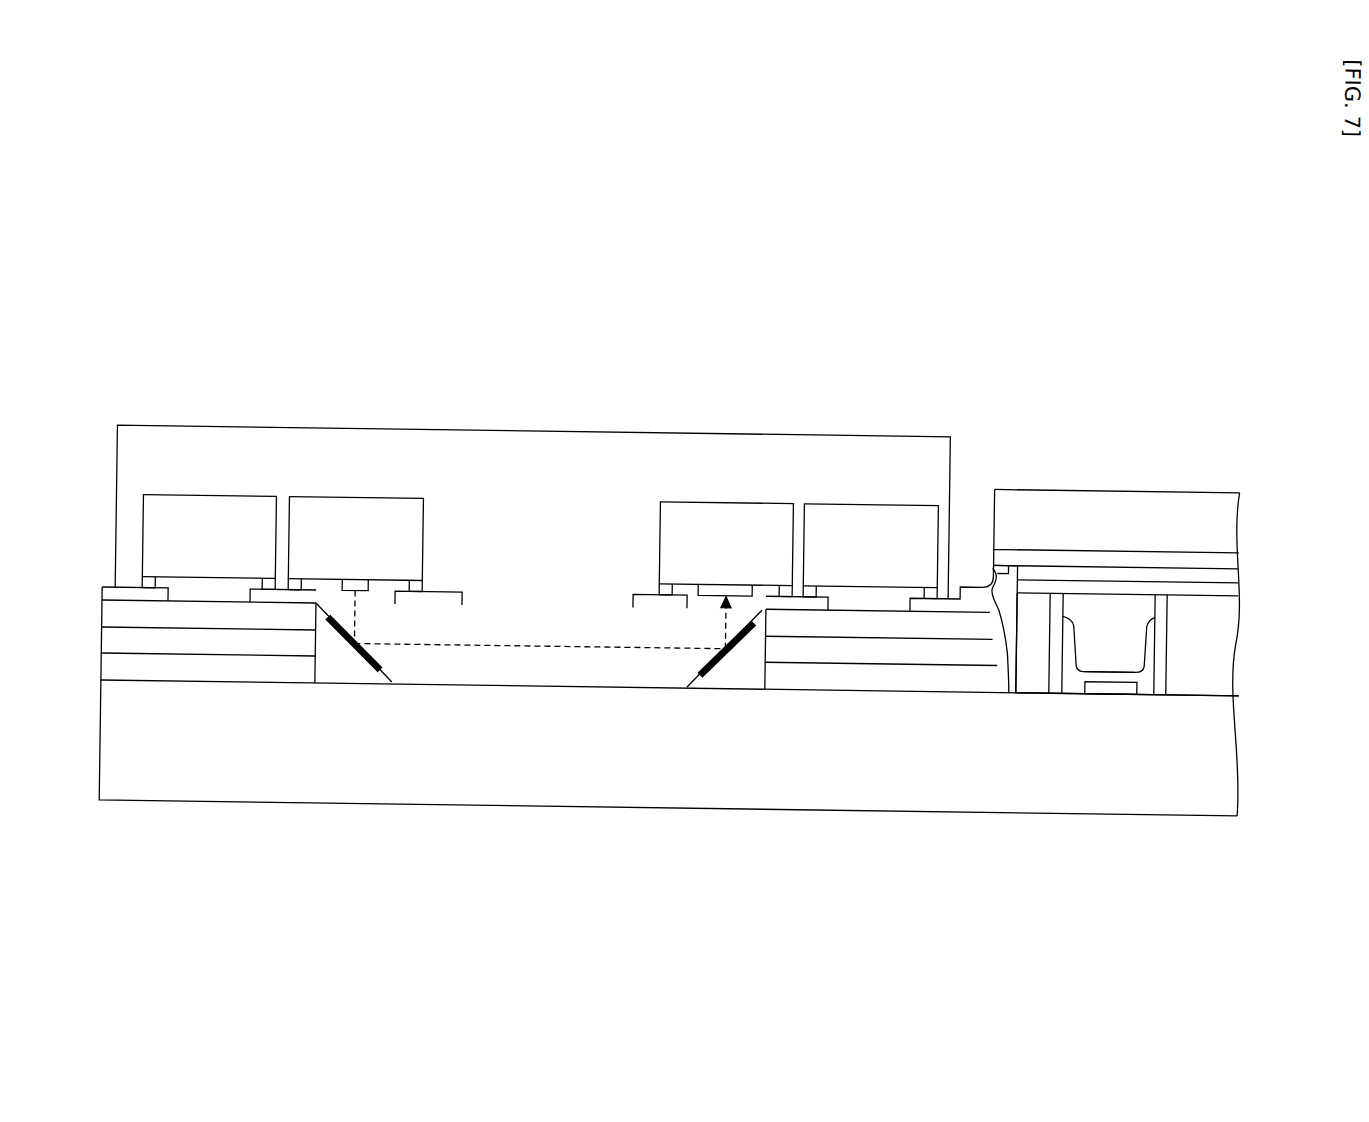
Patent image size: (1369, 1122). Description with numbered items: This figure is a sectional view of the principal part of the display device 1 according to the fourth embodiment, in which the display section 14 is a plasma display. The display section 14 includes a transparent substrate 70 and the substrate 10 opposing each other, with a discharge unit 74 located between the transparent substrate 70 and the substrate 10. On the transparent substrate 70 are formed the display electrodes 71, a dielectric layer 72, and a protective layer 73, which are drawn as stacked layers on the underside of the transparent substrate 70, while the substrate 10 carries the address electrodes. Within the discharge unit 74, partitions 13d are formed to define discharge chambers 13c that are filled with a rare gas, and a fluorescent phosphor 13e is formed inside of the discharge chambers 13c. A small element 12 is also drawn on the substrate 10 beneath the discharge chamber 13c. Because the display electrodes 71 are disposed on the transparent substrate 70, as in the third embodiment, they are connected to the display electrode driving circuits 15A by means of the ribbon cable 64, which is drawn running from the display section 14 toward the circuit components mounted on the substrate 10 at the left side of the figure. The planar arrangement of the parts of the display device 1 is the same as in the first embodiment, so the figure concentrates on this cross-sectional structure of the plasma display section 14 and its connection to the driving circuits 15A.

The display device 1 is at (770, 358).
The substrate 10 is at (1200, 750).
The wiring pad 12 is at (1110, 680).
The discharge chamber 13c is at (1130, 627).
The partition 13d is at (1160, 678).
The fluorescent phosphor 13e is at (1148, 653).
The display section 14 is at (1160, 463).
The display electrode driving circuit 15A is at (886, 522).
The ribbon cable 64 is at (1010, 680).
The transparent substrate 70 is at (1208, 486).
The display electrode 71 is at (1058, 540).
The dielectric layer 72 is at (1217, 556).
The protective layer 73 is at (1230, 574).
The discharge unit 74 is at (1212, 622).